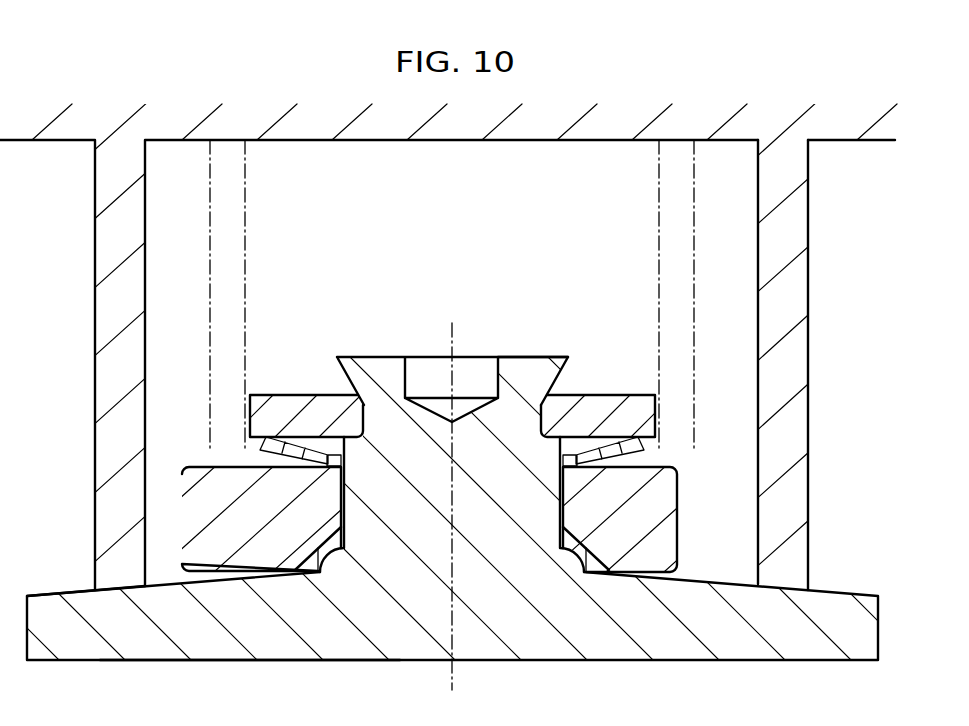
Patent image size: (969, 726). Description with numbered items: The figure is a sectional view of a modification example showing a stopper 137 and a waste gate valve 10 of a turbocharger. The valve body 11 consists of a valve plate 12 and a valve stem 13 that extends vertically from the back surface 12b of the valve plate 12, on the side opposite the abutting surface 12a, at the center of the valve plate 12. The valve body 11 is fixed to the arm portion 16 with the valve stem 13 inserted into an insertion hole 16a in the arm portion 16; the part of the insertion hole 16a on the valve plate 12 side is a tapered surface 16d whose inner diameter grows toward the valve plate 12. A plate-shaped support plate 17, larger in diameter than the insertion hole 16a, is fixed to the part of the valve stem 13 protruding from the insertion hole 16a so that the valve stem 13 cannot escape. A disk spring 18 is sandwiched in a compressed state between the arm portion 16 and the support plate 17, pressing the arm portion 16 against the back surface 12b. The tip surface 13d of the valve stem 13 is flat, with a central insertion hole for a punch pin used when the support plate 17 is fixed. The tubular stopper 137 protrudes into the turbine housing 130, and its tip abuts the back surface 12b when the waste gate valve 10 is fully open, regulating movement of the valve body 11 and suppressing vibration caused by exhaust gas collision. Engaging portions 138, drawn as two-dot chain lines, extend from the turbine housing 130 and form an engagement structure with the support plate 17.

The waste gate valve 10 is at (423, 319).
The valve body 11 is at (880, 514).
The valve plate 12 is at (818, 588).
The abutting surface 12a is at (167, 660).
The back surface 12b is at (78, 583).
The valve stem 13 is at (563, 515).
The tip surface 13d is at (517, 357).
The arm portion 16 is at (182, 514).
The insertion hole 16a is at (341, 513).
The tapered surface 16d is at (320, 575).
The support plate 17 is at (298, 395).
The disk spring 18 is at (617, 468).
The turbine housing 130 is at (62, 140).
The stopper 137 is at (809, 370).
The engaging portion 138 is at (247, 244).